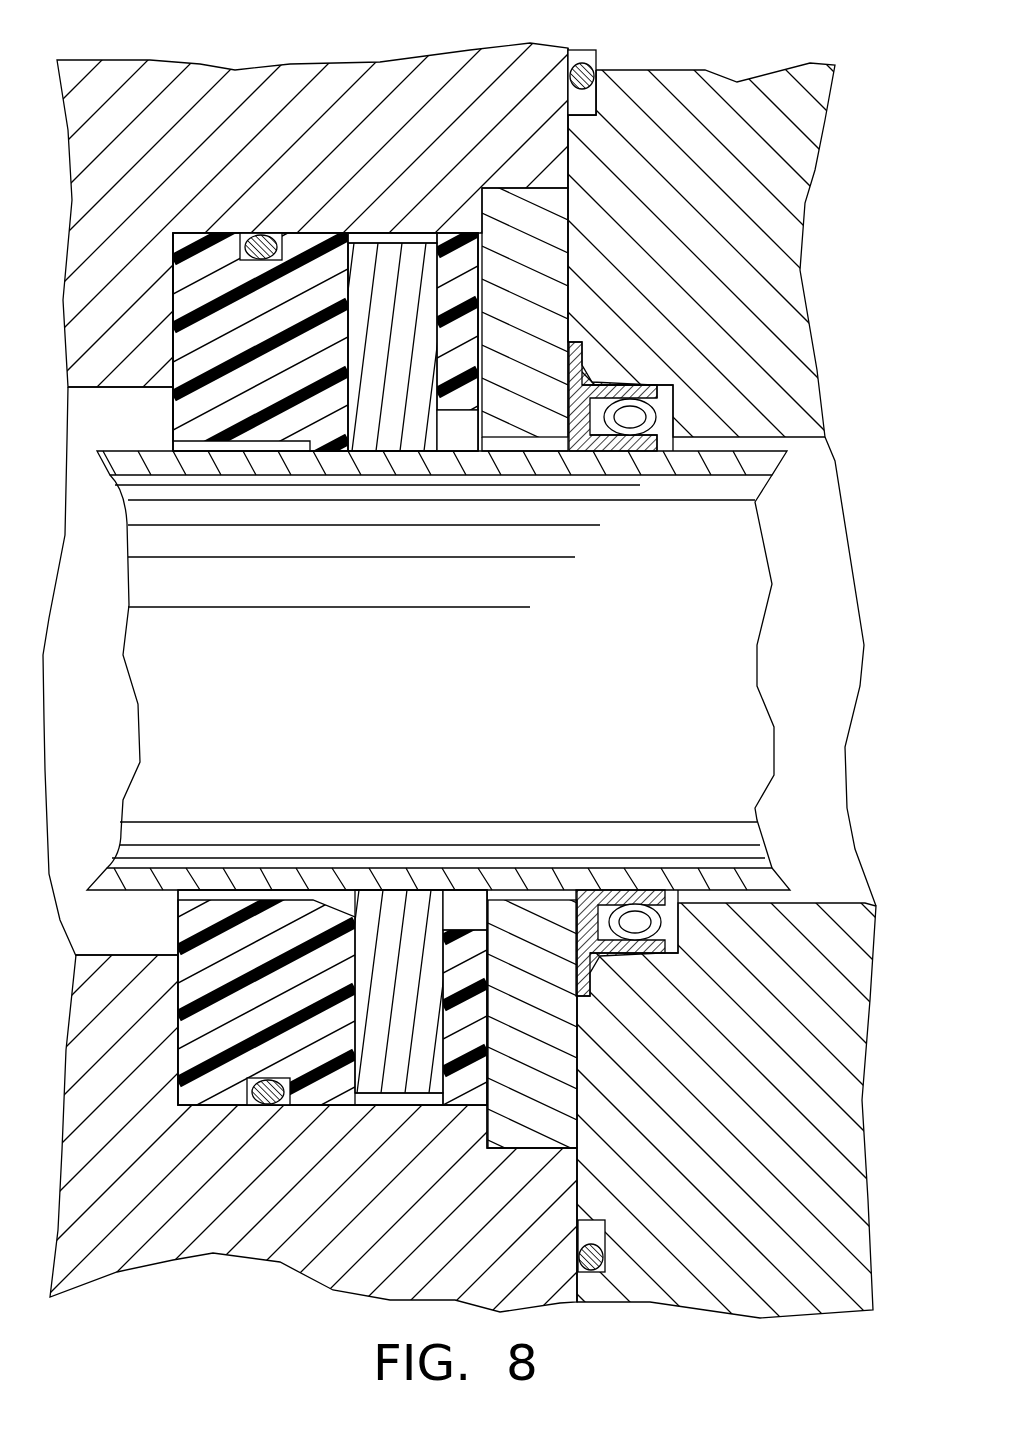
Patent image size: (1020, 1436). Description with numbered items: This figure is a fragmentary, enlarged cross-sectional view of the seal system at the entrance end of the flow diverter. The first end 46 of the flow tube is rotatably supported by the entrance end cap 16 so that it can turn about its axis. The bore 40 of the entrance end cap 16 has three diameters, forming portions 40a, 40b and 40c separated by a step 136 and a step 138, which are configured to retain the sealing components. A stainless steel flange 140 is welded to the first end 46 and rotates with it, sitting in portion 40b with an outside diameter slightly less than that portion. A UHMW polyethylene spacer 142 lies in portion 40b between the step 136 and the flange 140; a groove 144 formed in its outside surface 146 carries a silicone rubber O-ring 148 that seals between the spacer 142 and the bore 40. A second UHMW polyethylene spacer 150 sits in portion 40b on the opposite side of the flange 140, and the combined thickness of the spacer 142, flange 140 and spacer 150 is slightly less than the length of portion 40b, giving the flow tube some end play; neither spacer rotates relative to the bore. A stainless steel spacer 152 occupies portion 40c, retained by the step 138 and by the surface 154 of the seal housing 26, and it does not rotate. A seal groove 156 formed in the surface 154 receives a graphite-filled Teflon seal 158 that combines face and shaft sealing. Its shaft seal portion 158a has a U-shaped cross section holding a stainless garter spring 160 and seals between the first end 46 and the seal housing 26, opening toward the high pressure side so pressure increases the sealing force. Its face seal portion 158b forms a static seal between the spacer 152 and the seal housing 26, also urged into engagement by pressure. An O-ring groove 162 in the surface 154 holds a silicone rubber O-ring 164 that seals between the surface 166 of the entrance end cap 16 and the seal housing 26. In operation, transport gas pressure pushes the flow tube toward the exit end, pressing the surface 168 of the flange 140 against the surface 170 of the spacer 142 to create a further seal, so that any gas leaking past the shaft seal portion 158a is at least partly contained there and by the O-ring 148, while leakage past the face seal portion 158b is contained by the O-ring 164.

The entrance end cap 16 is at (440, 62).
The seal housing 26 is at (818, 114).
The bore 40 is at (135, 392).
The portion of bore 40a is at (95, 955).
The portion of bore 40b is at (380, 1105).
The portion of bore 40c is at (518, 1150).
The first end of flow tube 46 is at (290, 870).
The step 136 is at (172, 302).
The step 138 is at (478, 195).
The flange 140 is at (350, 233).
The spacer 142 is at (205, 1100).
The groove 144 is at (272, 1080).
The outside surface of spacer 146 is at (190, 233).
The O-ring 148 is at (250, 232).
The spacer 150 is at (462, 1107).
The spacer 152 is at (563, 1098).
The surface of seal housing 154 is at (558, 262).
The seal groove 156 is at (676, 405).
The seal 158 is at (600, 962).
The shaft seal portion 158a is at (650, 385).
The face seal portion 158b is at (590, 362).
The garter spring 160 is at (645, 413).
The O-ring groove 162 is at (600, 95).
The O-ring 164 is at (585, 58).
The surface of entrance end cap 166 is at (572, 205).
The surface of flange 168 is at (348, 340).
The surface of spacer 170 is at (348, 322).